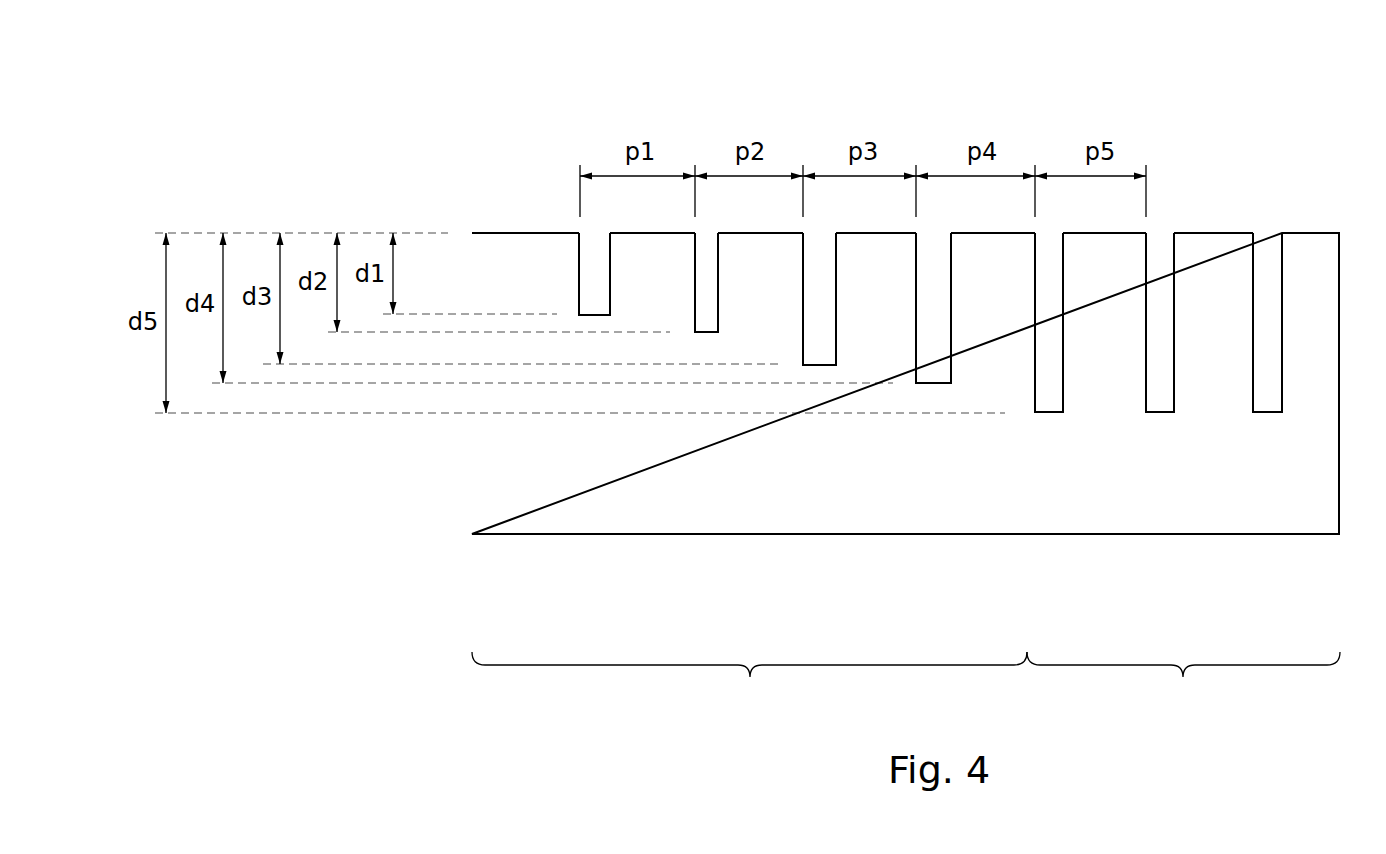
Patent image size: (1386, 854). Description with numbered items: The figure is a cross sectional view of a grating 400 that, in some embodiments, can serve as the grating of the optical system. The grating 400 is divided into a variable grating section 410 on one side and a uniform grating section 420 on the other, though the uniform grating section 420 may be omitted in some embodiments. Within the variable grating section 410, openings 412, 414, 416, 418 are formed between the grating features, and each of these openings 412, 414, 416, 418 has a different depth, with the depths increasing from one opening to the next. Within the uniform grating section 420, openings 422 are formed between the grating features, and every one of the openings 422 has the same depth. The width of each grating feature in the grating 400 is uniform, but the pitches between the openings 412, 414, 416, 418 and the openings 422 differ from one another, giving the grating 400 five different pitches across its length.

The grating 400 is at (328, 122).
The variable grating section 410 is at (749, 684).
The opening 412 is at (578, 250).
The opening 414 is at (707, 250).
The opening 416 is at (820, 250).
The opening 418 is at (932, 250).
The uniform grating section 420 is at (1183, 684).
The openings 422 is at (1050, 252).